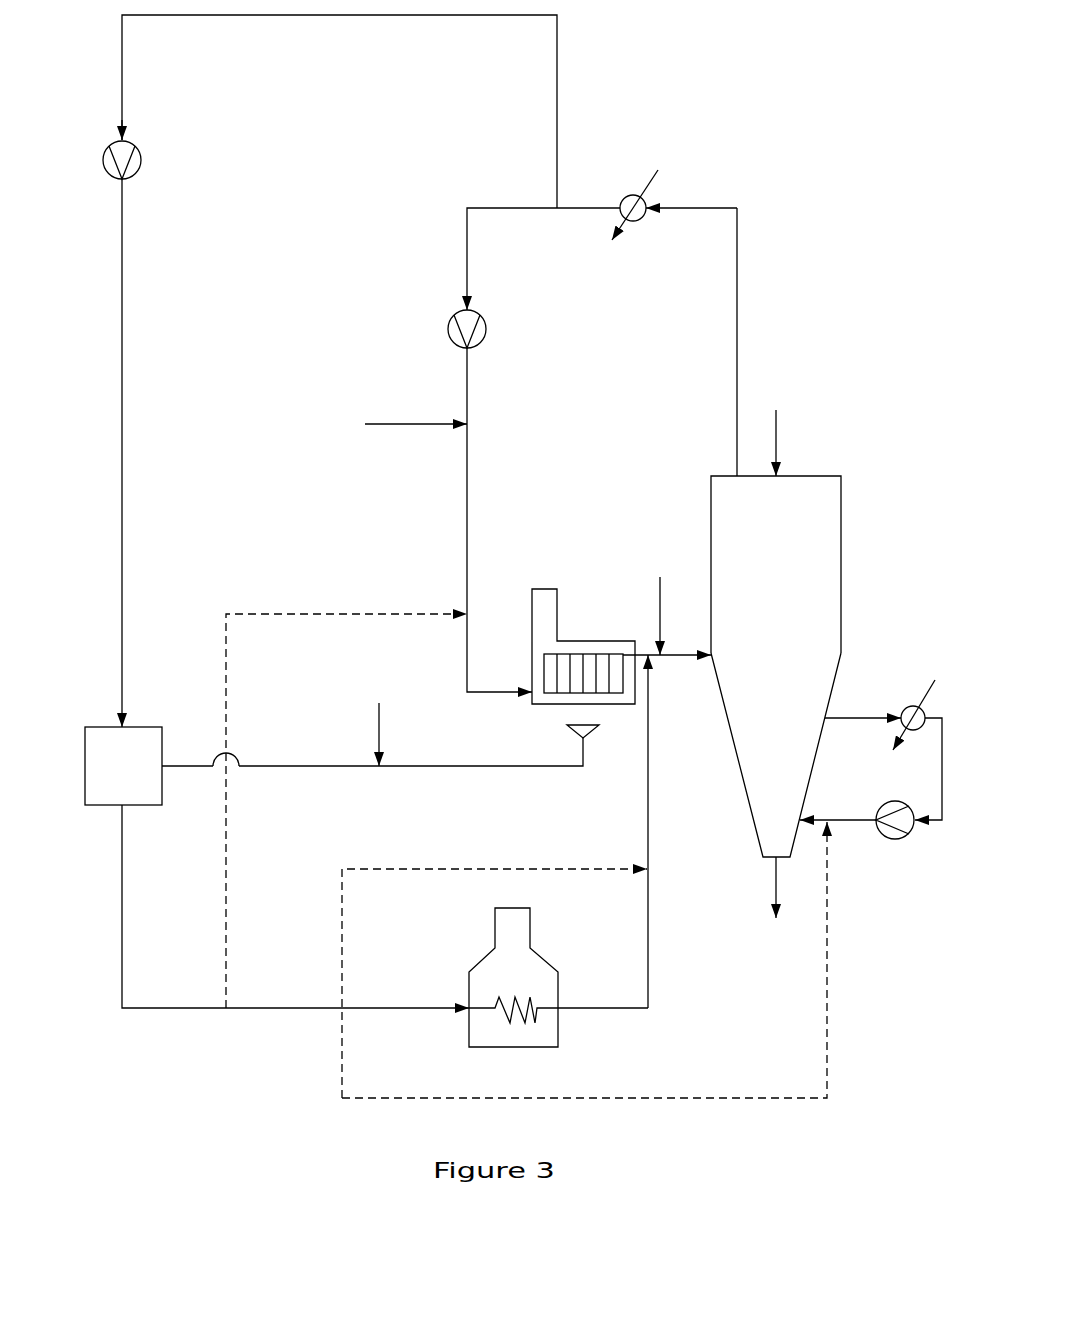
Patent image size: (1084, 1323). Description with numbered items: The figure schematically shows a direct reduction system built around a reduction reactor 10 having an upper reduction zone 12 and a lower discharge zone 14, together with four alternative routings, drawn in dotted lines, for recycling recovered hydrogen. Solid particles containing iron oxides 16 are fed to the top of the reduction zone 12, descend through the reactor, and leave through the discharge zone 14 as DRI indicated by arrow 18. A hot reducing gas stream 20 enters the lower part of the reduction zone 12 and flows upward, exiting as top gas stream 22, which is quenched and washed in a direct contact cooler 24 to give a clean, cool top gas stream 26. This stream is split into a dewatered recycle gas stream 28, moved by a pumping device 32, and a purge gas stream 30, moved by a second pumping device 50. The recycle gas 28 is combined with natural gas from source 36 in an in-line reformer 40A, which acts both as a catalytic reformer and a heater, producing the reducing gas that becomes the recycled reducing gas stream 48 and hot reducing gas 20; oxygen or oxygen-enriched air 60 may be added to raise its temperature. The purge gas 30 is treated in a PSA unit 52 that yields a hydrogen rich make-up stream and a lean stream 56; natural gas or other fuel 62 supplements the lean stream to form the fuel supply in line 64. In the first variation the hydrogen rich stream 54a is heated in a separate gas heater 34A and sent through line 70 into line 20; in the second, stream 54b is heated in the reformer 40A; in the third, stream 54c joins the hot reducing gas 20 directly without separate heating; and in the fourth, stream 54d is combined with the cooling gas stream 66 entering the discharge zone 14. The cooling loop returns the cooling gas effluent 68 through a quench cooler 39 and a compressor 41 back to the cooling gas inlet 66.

The reduction reactor 10 is at (884, 466).
The reduction zone 12 is at (803, 601).
The discharge zone 14 is at (803, 733).
The solid particles containing iron oxides 16 is at (777, 433).
The DRI discharge 18 is at (774, 884).
The hot reducing gas stream 20 is at (676, 657).
The top gas stream 22 is at (739, 297).
The direct contact cooler 24 is at (633, 196).
The clean and cool top gas stream 26 is at (594, 207).
The dewatered recycle gas stream 28 is at (502, 207).
The purge gas stream 30 is at (558, 70).
The pumping device 32 is at (449, 326).
The natural gas source 36 is at (432, 427).
The quench cooler 39 is at (916, 696).
The in-line reformer 40A is at (545, 589).
The compressor 41 is at (900, 840).
The recycled reducing gas stream 48 is at (466, 538).
The second pumping device 50 is at (142, 160).
The pressure swing adsorber unit 52 is at (145, 727).
The hydrogen rich stream to separate heater 54a is at (406, 1007).
The hydrogen rich stream to reformer 54b is at (226, 893).
The hydrogen rich stream to hot reducing gas 54c is at (342, 885).
The hydrogen rich stream to cooling gas 54d is at (381, 1097).
The lean stream 56 is at (304, 768).
The oxygen or oxygen enriched air 60 is at (664, 620).
The natural gas or other fuel 62 is at (376, 722).
The fuel supply line 64 is at (424, 768).
The cooling gas stream 66 is at (838, 817).
The discharge zone cooling gas effluent 68 is at (856, 717).
The hot hydrogen rich gas line 70 is at (644, 832).
The separate gas heater 34A is at (558, 970).